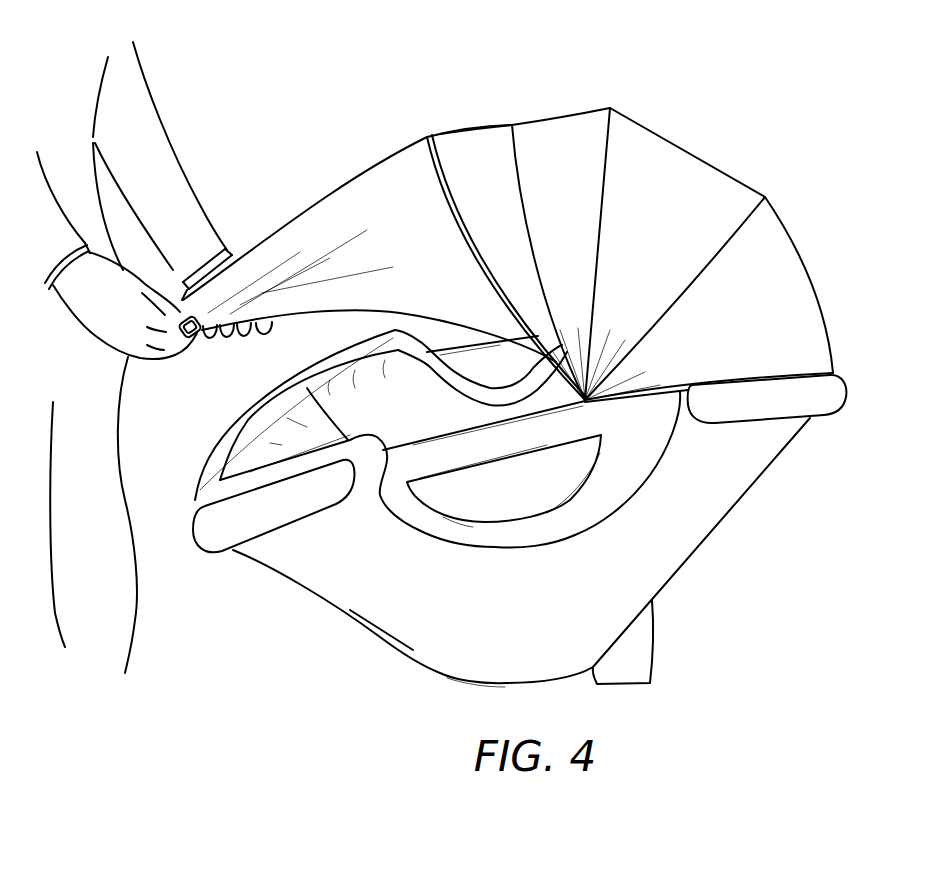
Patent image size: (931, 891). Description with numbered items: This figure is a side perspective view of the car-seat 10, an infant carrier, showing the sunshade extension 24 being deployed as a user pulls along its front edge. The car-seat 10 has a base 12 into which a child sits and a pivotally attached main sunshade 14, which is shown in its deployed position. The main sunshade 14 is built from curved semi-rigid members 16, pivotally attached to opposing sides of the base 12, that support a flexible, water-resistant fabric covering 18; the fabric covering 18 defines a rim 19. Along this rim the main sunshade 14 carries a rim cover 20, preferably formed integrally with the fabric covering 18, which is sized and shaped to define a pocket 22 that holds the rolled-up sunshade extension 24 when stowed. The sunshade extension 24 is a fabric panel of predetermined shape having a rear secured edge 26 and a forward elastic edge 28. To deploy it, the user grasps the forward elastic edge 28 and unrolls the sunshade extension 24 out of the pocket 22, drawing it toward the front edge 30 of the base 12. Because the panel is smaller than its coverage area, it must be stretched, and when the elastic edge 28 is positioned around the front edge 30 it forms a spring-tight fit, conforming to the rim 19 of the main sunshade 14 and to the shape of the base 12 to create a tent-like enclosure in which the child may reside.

The car-seat 10 is at (703, 533).
The base 12 is at (328, 413).
The main sunshade 14 is at (633, 130).
The curved semi-rigid members 16 is at (427, 137).
The fabric covering 18 is at (730, 183).
The rim 19 is at (450, 202).
The rim cover 20 is at (495, 238).
The pocket 22 is at (435, 163).
The sunshade extension 24 is at (338, 248).
The rear secured edge 26 is at (515, 152).
The forward elastic edge 28 is at (205, 332).
The front edge 30 is at (230, 455).